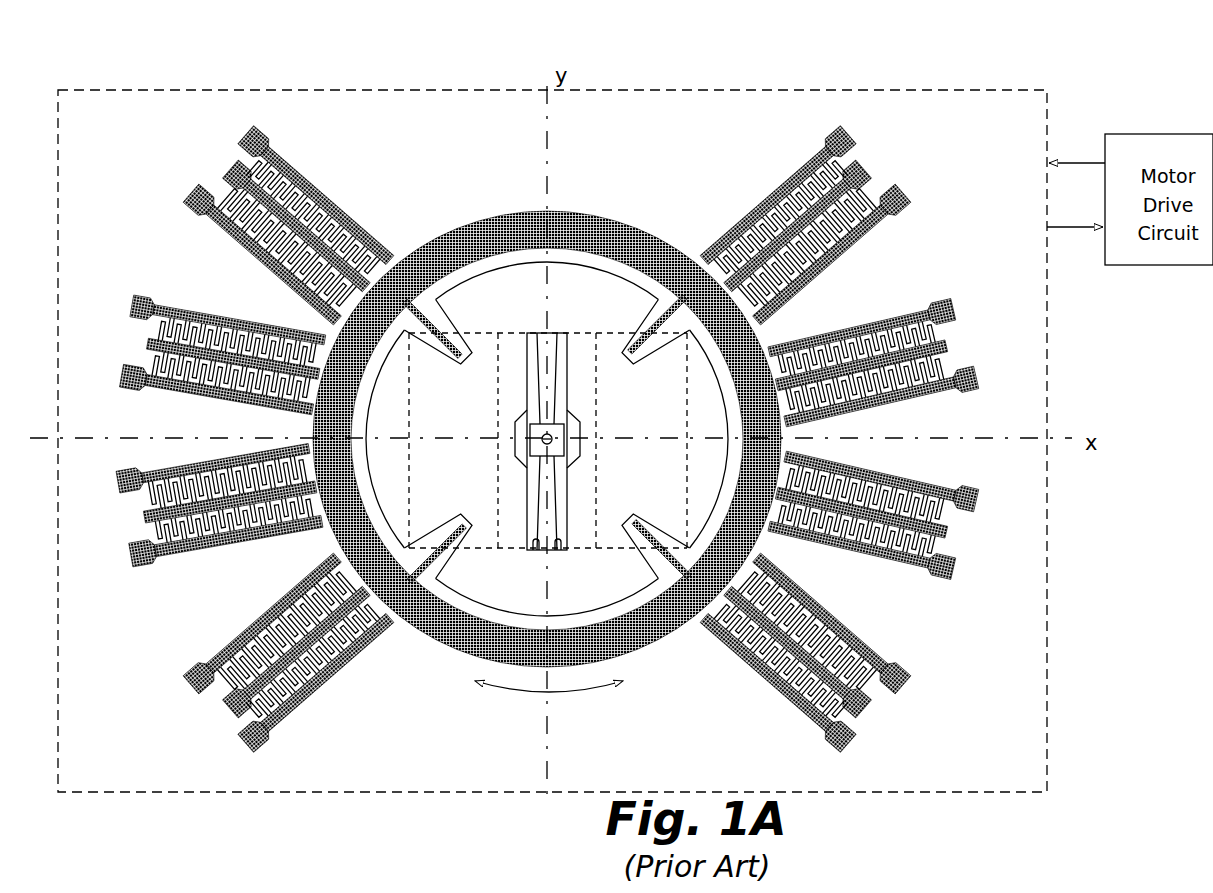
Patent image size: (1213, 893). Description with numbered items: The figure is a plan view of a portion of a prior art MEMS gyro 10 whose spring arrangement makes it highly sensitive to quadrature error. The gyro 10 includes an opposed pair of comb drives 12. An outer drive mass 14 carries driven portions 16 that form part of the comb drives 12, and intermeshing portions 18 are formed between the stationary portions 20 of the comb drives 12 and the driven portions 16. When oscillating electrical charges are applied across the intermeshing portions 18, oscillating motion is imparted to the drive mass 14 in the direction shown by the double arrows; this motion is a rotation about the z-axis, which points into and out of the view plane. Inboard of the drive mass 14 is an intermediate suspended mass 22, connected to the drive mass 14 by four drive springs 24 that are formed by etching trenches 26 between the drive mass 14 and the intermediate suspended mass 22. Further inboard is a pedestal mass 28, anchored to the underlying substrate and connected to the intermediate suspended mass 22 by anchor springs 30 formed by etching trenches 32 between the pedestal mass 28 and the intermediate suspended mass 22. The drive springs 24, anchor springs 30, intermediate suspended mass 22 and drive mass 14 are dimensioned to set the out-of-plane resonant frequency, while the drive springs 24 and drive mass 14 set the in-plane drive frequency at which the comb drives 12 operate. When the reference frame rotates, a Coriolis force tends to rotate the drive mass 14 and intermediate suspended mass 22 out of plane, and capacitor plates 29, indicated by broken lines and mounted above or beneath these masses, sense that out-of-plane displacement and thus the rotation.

The MEMS gyro 10 is at (706, 123).
The comb drives 12 is at (339, 186).
The drive mass 14 is at (432, 228).
The driven portions 16 is at (230, 186).
The intermeshing portions 18 is at (205, 192).
The stationary portions 20 is at (262, 165).
The intermediate suspended mass 22 is at (573, 268).
The drive springs 24 is at (448, 346).
The trenches 26 is at (517, 262).
The pedestal mass 28 is at (533, 426).
The capacitor plates 29 is at (482, 540).
The anchor springs 30 is at (538, 340).
The trenches 32 is at (566, 427).